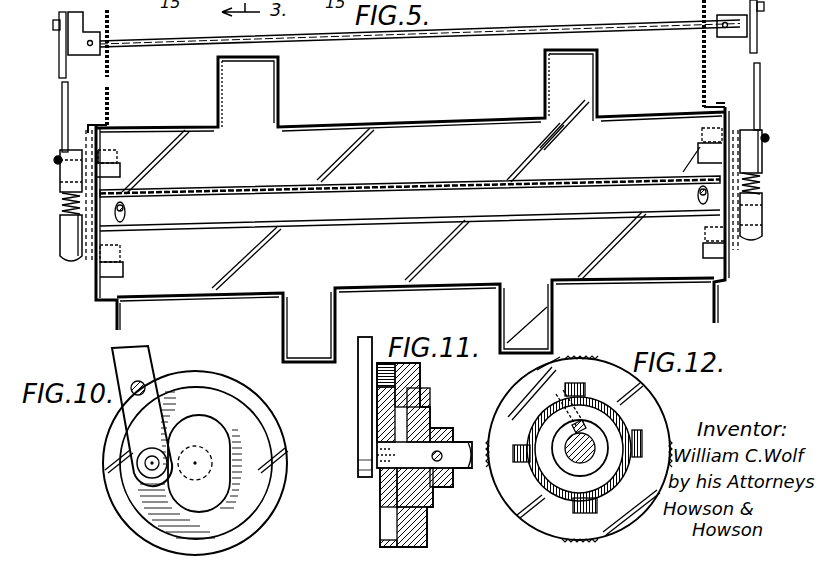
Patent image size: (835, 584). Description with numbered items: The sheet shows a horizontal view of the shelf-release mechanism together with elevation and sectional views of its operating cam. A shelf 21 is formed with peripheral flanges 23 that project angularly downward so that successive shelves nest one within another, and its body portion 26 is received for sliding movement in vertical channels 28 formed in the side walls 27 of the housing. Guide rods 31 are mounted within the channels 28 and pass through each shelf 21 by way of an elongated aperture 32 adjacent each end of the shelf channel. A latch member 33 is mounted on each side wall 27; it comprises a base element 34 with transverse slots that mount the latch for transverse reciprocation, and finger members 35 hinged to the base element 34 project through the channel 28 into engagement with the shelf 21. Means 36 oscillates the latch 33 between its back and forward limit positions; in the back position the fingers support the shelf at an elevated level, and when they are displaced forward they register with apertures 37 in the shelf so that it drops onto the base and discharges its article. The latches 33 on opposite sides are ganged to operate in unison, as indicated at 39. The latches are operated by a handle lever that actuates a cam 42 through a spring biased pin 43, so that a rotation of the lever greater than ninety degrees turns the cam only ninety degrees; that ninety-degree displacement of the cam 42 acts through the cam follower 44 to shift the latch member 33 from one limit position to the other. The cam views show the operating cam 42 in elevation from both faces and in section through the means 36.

In FIG. 5, the shelf 21 is at (423, 165).
In FIG. 5, the peripheral flanges 23 is at (277, 297).
In FIG. 5, the body portion 26 is at (400, 130).
In FIG. 5, the side walls 27 is at (110, 87).
In FIG. 5, the vertical channels 28 is at (100, 123).
In FIG. 5, the rods 31 is at (128, 212).
In FIG. 5, the elongated aperture 32 is at (125, 205).
In FIG. 5, the latch member 33 is at (60, 185).
In FIG. 5, the base element 34 is at (67, 227).
In FIG. 5, the finger members 35 is at (123, 247).
In FIG. 10, the means for oscillating the latch 36 is at (143, 358).
In FIG. 11, the means for oscillating the latch 36 is at (363, 395).
In FIG. 5, the apertures 37 is at (122, 167).
In FIG. 5, the ganging means 39 is at (72, 42).
In FIG. 10, the cam 42 is at (268, 502).
In FIG. 11, the cam 42 is at (427, 530).
In FIG. 12, the cam 42 is at (601, 365).
In FIG. 12, the spring biased pin 43 is at (567, 397).
In FIG. 10, the cam follower 44 is at (130, 493).